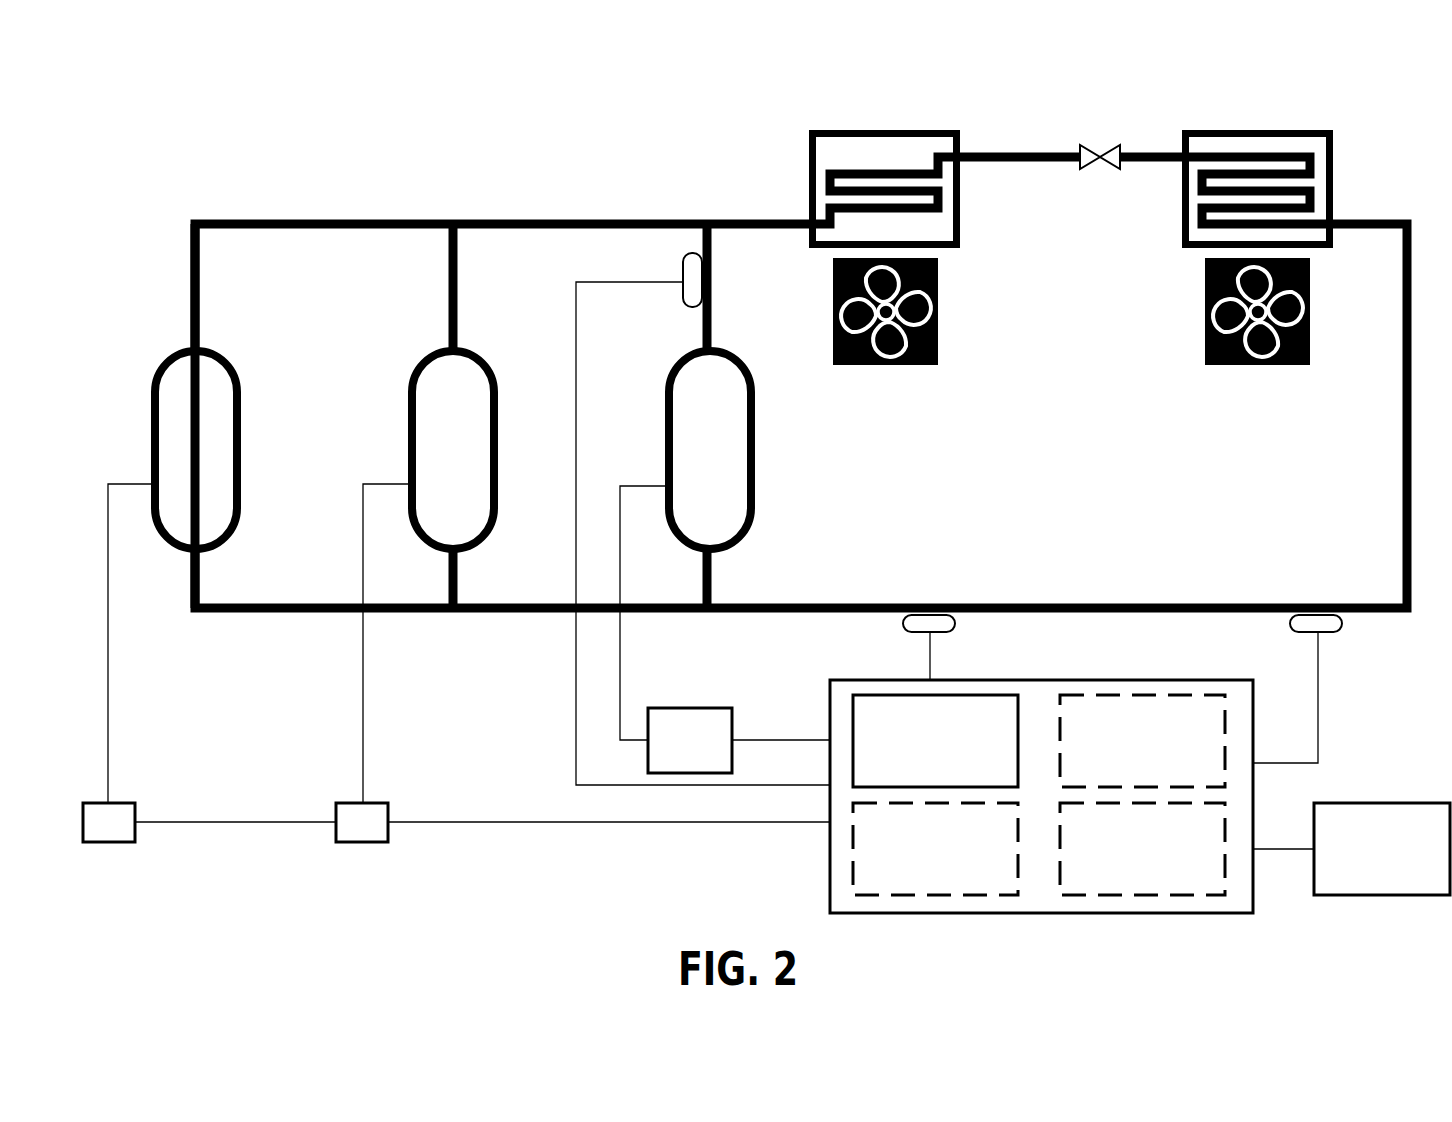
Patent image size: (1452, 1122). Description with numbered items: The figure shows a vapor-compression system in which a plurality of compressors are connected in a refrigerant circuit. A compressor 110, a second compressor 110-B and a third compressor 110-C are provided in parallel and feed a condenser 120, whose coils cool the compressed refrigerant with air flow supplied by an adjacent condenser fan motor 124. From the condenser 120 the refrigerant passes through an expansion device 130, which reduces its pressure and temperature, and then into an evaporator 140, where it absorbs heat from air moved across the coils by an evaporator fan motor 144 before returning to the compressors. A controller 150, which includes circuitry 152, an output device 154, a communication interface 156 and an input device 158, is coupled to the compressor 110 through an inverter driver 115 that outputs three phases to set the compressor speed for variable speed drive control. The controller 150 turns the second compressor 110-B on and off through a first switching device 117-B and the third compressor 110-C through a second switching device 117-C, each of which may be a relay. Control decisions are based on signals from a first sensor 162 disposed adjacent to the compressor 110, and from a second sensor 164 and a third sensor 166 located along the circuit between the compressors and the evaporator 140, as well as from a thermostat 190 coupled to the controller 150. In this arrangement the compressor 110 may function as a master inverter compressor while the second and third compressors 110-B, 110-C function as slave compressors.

The compressor 110 is at (757, 460).
The second compressor 110-B is at (470, 352).
The third compressor 110-C is at (228, 352).
The inverter driver 115 is at (732, 722).
The first switching device 117-B is at (376, 803).
The second switching device 117-C is at (120, 803).
The condenser 120 is at (823, 130).
The condenser fan motor 124 is at (927, 333).
The expansion device 130 is at (1080, 145).
The evaporator 140 is at (1263, 130).
The evaporator fan motor 144 is at (1300, 333).
The controller 150 is at (1160, 680).
The circuitry 152 is at (998, 751).
The output device 154 is at (919, 873).
The communication interface 156 is at (1206, 763).
The input device 158 is at (1125, 873).
The first sensor 162 is at (683, 262).
The second sensor 164 is at (950, 628).
The third sensor 166 is at (1335, 628).
The thermostat 190 is at (1366, 875).